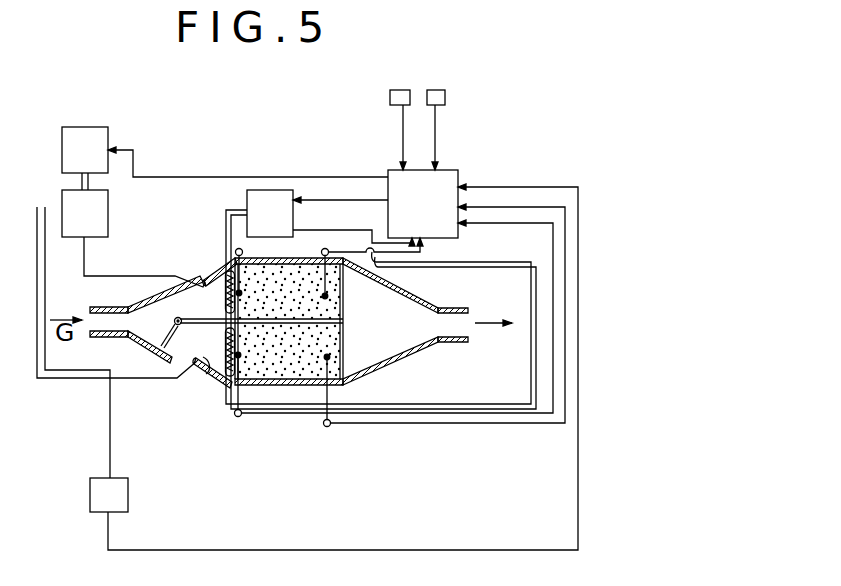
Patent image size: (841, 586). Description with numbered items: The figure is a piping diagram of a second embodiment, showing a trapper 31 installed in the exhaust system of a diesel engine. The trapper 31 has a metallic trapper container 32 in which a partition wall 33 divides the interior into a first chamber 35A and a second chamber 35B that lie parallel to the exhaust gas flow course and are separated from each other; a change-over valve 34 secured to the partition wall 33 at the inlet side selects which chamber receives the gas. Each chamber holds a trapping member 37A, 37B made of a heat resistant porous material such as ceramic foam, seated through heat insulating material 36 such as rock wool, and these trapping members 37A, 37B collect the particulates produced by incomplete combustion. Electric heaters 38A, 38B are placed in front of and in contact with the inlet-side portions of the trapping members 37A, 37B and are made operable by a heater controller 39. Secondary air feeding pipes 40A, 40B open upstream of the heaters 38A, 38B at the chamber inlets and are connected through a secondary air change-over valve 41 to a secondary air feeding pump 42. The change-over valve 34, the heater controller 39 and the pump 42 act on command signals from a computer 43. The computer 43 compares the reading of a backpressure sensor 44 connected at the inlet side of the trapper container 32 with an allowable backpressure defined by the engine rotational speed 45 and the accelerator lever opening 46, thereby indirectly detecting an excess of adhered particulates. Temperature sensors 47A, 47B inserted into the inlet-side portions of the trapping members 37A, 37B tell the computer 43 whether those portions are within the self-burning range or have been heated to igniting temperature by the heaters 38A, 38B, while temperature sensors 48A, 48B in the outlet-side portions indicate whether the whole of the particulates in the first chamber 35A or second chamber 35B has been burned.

The trapper 31 is at (425, 355).
The trapper container 32 is at (368, 374).
The partition wall 33 is at (297, 328).
The change-over valve 34 is at (163, 357).
The first chamber 35A is at (222, 272).
The second chamber 35B is at (223, 409).
The heat insulating material 36 is at (267, 386).
The trapping member 37A is at (328, 308).
The trapping member 37B is at (333, 340).
The electric heater 38A is at (228, 306).
The electric heater 38B is at (236, 345).
The heater controller 39 is at (253, 198).
The secondary air feeding pipe 40A is at (201, 280).
The secondary air feeding pipe 40B is at (204, 378).
The secondary air change-over valve 41 is at (100, 215).
The secondary air feeding pump 42 is at (70, 145).
The computer 43 is at (398, 177).
The backpressure sensor 44 is at (97, 496).
The rotational speed 45 is at (398, 90).
The opening of accelerator lever 46 is at (437, 90).
The temperature sensor 47A is at (243, 252).
The temperature sensor 47B is at (238, 417).
The temperature sensor 48A is at (328, 250).
The temperature sensor 48B is at (330, 425).